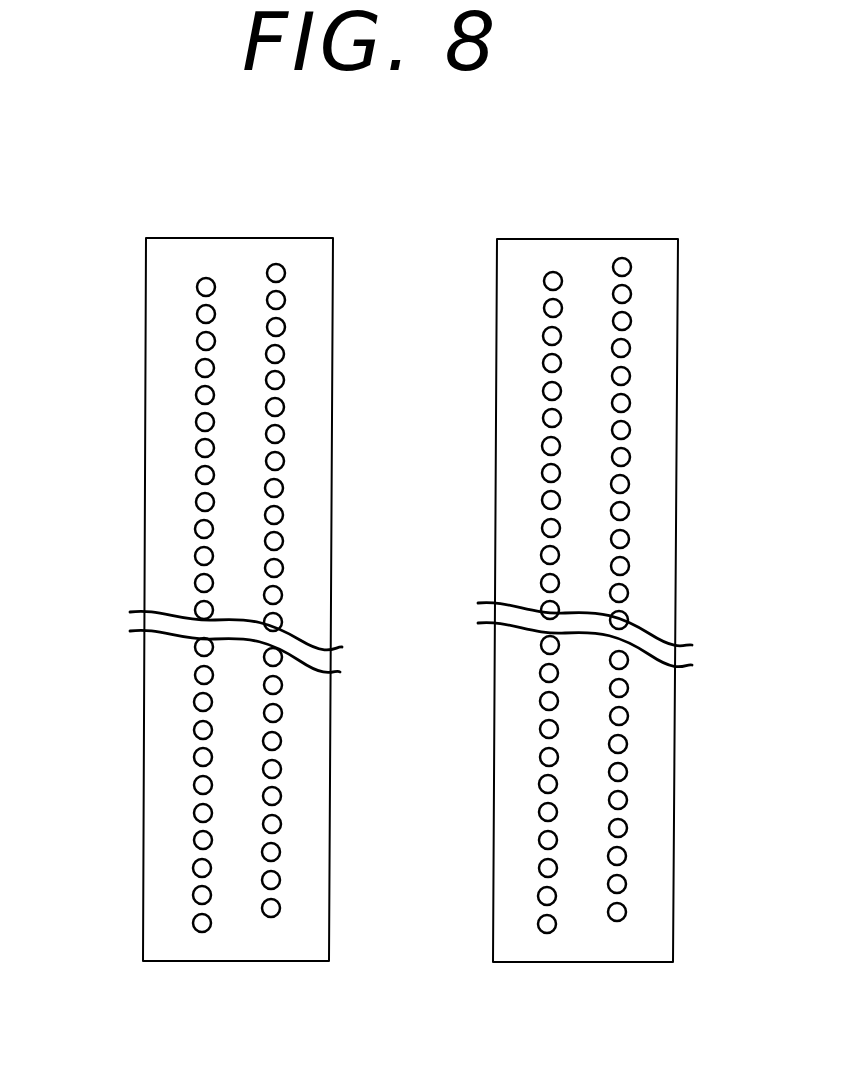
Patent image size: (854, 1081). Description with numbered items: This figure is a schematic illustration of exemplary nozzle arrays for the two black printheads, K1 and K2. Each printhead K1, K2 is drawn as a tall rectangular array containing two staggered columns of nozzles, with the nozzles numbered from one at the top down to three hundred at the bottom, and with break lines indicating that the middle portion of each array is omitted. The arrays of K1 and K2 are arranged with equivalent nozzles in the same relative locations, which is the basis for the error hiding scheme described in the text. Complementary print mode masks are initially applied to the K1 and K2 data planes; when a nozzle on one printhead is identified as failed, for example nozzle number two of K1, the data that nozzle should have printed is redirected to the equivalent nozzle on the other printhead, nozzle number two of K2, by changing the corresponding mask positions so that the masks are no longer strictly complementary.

The K1 printhead K1 is at (201, 611).
The K2 printhead K2 is at (611, 605).